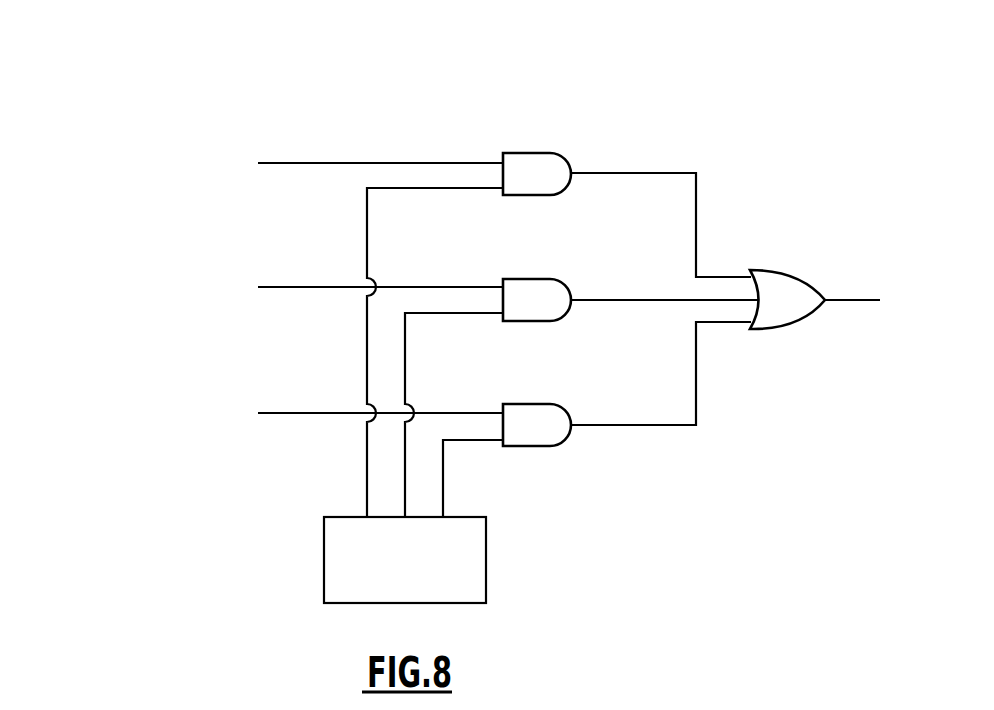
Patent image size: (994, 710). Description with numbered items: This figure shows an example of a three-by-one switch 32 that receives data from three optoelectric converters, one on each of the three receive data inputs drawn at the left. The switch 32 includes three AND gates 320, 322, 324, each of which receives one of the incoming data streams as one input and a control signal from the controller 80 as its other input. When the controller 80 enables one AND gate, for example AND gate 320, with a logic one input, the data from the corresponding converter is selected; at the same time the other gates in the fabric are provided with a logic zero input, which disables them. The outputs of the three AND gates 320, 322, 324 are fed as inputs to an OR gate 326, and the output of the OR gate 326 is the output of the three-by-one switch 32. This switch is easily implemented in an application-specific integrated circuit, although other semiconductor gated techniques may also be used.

The 3×1 switch 32 is at (698, 88).
The AND gate 320 is at (563, 162).
The AND gate 322 is at (563, 288).
The AND gate 324 is at (563, 413).
The OR gate 326 is at (790, 312).
The controller 80 is at (486, 573).